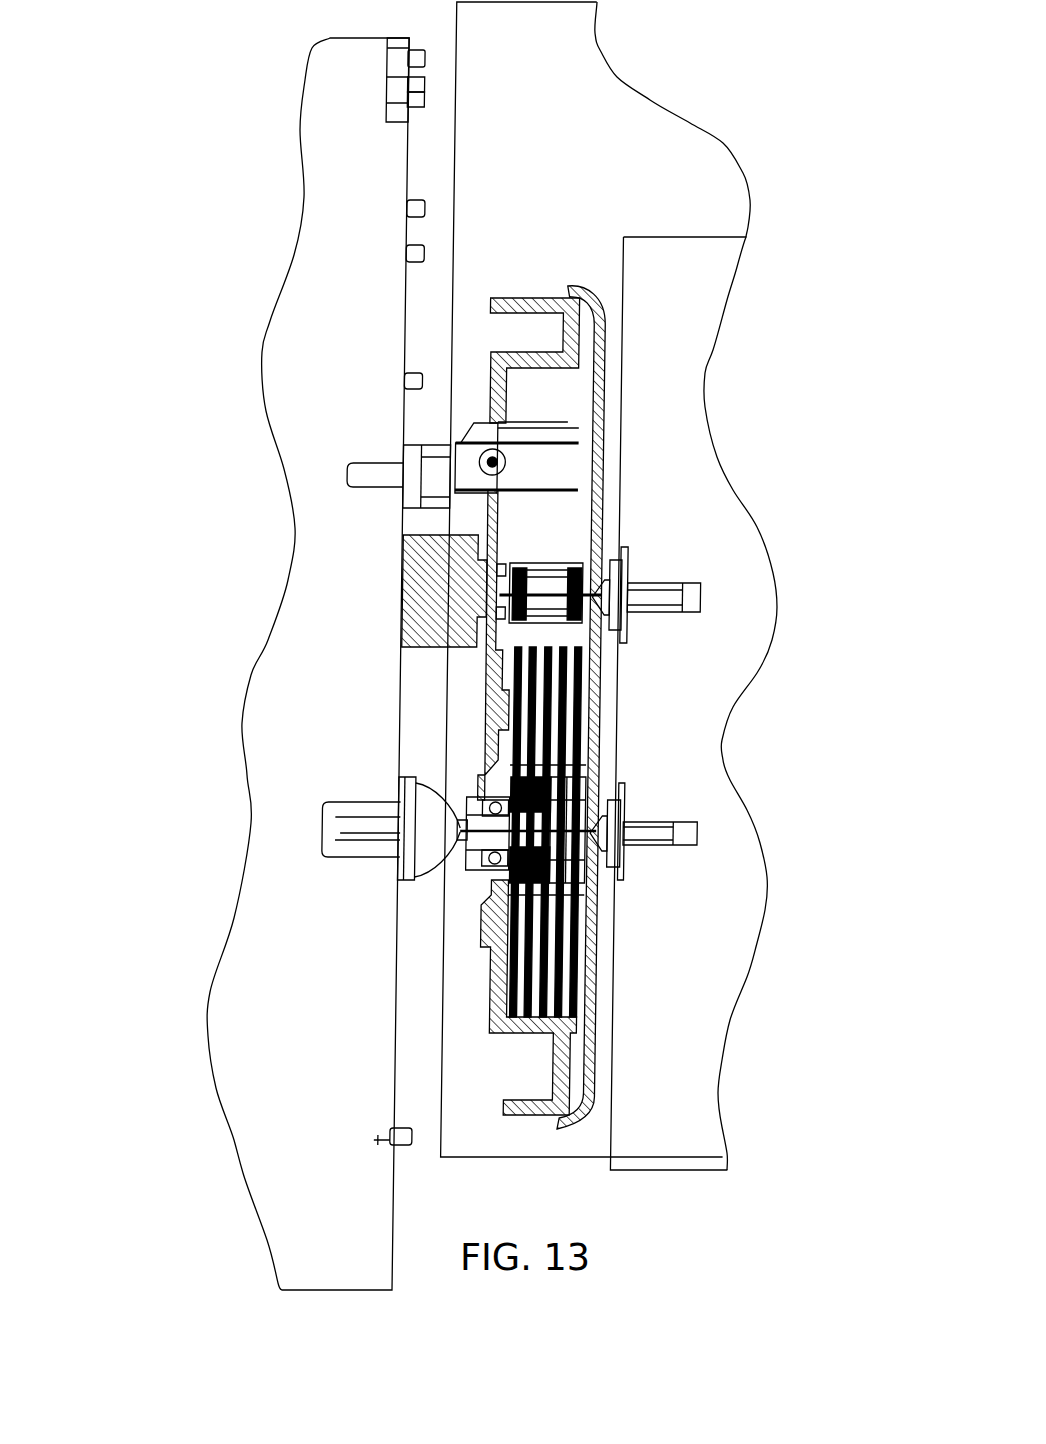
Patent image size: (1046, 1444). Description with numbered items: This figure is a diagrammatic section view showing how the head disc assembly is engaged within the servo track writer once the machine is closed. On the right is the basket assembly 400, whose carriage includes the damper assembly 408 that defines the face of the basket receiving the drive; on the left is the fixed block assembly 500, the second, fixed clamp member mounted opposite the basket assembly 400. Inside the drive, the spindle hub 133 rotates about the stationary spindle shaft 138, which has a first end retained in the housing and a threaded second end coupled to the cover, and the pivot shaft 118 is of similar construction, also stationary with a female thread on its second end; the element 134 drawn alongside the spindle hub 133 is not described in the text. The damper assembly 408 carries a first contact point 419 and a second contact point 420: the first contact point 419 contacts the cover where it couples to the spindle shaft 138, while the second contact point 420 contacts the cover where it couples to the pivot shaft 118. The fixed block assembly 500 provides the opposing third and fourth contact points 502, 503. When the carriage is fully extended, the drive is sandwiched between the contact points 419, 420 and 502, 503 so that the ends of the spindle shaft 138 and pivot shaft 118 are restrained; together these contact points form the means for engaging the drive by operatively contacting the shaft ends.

The fixed block assembly 500 is at (335, 166).
The basket assembly 400 is at (650, 157).
The damper assembly 408 is at (680, 370).
The pivot shaft 118 is at (547, 580).
The fourth contact point 503 is at (487, 587).
The spindle hub 133 is at (490, 717).
The third contact point 502 is at (463, 807).
The spindle shaft 138 is at (483, 873).
The rotor stack 134 is at (527, 993).
The second contact point 420 is at (627, 613).
The first contact point 419 is at (633, 848).